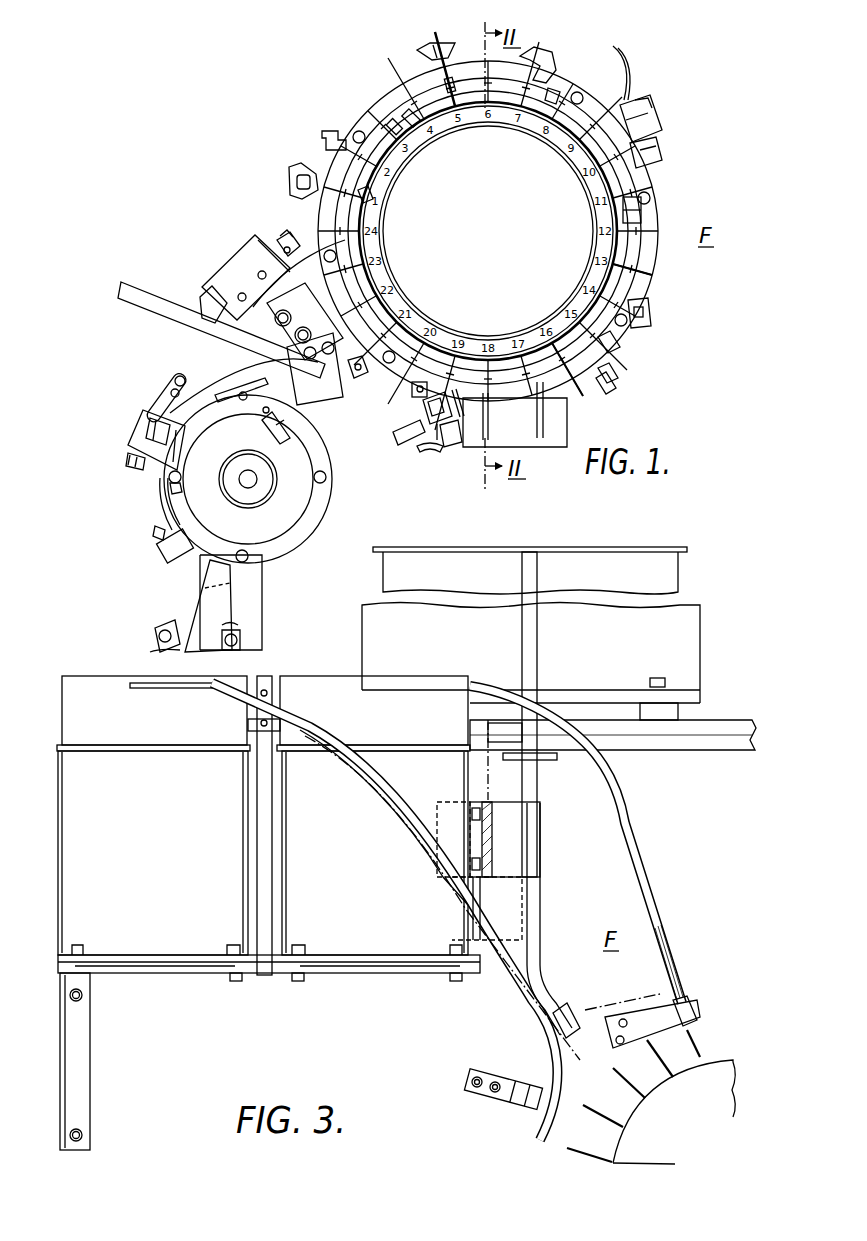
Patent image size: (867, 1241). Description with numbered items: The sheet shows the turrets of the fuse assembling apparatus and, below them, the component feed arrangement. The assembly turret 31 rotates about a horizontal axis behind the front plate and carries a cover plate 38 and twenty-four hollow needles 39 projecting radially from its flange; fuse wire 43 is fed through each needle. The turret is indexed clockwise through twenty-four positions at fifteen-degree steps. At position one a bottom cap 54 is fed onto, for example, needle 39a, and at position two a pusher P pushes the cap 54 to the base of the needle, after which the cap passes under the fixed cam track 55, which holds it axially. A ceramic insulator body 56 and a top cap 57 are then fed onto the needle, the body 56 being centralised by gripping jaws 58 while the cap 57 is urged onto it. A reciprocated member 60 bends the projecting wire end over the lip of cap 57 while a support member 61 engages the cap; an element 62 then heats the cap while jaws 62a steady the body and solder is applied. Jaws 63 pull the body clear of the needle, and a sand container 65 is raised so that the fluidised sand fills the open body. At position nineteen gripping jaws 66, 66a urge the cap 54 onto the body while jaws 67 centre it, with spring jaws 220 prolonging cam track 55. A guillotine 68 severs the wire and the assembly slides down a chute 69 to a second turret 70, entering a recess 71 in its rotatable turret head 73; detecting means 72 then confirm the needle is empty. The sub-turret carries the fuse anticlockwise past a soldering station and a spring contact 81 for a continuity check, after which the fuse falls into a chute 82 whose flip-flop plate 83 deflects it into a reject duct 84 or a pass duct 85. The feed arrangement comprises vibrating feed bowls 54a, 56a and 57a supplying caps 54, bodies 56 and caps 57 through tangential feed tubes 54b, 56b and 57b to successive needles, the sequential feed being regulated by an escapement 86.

In FIG. 1, the cover plate 38 is at (498, 256).
In FIG. 1, the hollow needles 39 is at (650, 271).
In FIG. 1, the needle 39a is at (320, 202).
In FIG. 3, the needle 39a is at (588, 1152).
In FIG. 1, the assembly turret 31 is at (642, 215).
In FIG. 1, the fuse wire 43 is at (612, 348).
In FIG. 1, the bottom cap 54 is at (372, 196).
In FIG. 3, the vibrating feed bowl 54a is at (70, 702).
In FIG. 3, the tangential feed tube 54b is at (385, 800).
In FIG. 1, the cam track 55 is at (388, 150).
In FIG. 1, the ceramic insulator body 56 is at (412, 126).
In FIG. 3, the vibrating feed bowl 56a is at (662, 544).
In FIG. 3, the tangential feed tube 56b is at (538, 657).
In FIG. 1, the top cap 57 is at (440, 52).
In FIG. 3, the vibrating feed bowl 57a is at (410, 690).
In FIG. 3, the tangential feed tube 57b is at (635, 820).
In FIG. 1, the gripping jaws 58 is at (452, 112).
In FIG. 1, the reciprocated member 60 is at (545, 58).
In FIG. 1, the support member 61 is at (556, 92).
In FIG. 1, the heating element 62 is at (642, 112).
In FIG. 1, the jaws 62a is at (655, 162).
In FIG. 1, the jaws 63 is at (648, 304).
In FIG. 1, the sand container 65 is at (552, 447).
In FIG. 1, the gripping jaw 66 is at (440, 392).
In FIG. 1, the gripping jaw 66a is at (412, 442).
In FIG. 1, the centering jaws 67 is at (410, 400).
In FIG. 1, the guillotine 68 is at (356, 378).
In FIG. 1, the chute 69 is at (268, 378).
In FIG. 1, the second turret 70 is at (325, 520).
In FIG. 1, the fuse receiving recess 71 is at (282, 444).
In FIG. 1, the detecting means 72 is at (322, 280).
In FIG. 1, the rotatable turret head 73 is at (326, 481).
In FIG. 1, the spring contact 81 is at (186, 548).
In FIG. 1, the chute 82 is at (200, 588).
In FIG. 1, the flip-flop plate 83 is at (230, 578).
In FIG. 1, the reject duct 84 is at (158, 636).
In FIG. 1, the pass duct 85 is at (238, 616).
In FIG. 3, the escapement 86 is at (543, 946).
In FIG. 1, the spring jaws 220 is at (425, 405).
In FIG. 1, the pusher P is at (320, 134).